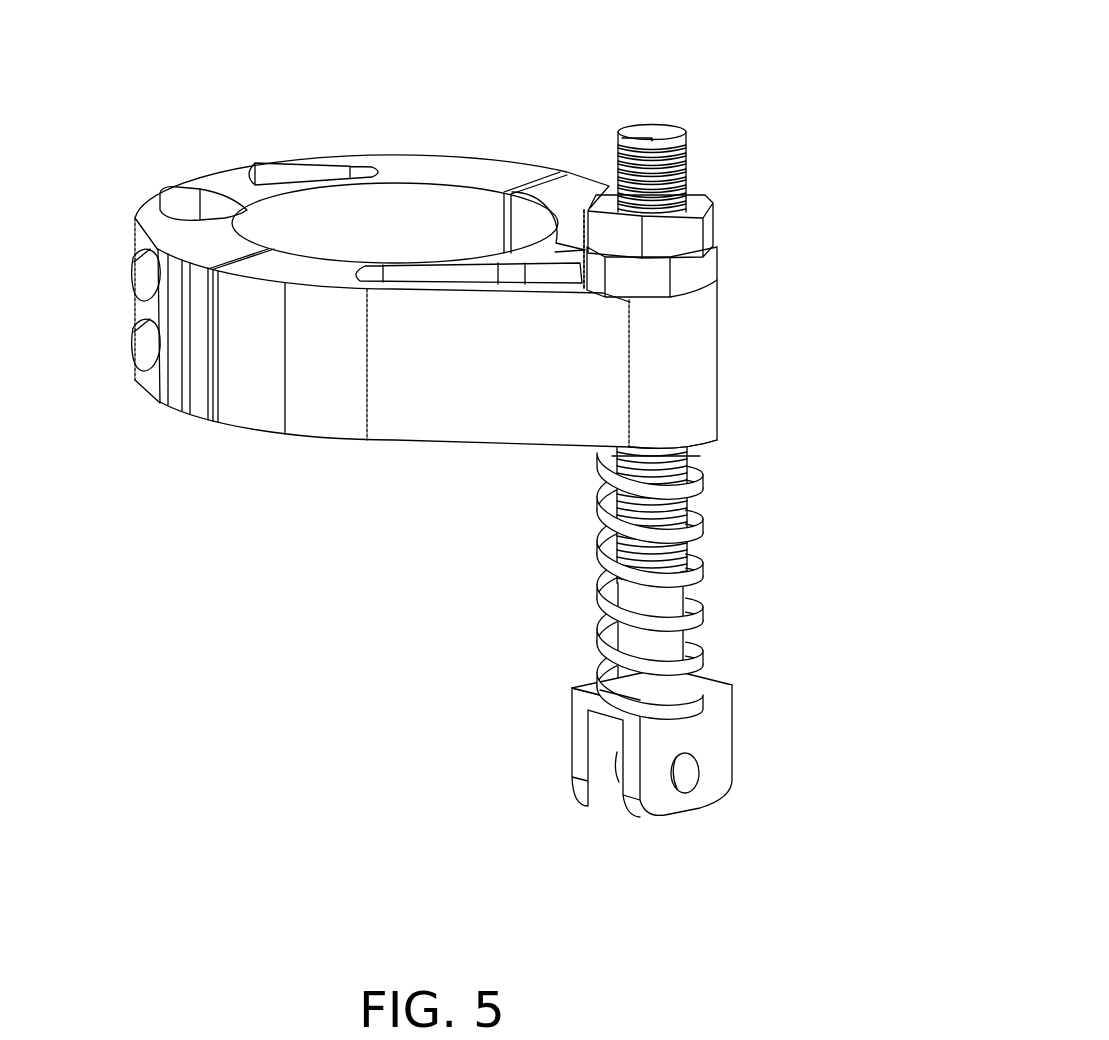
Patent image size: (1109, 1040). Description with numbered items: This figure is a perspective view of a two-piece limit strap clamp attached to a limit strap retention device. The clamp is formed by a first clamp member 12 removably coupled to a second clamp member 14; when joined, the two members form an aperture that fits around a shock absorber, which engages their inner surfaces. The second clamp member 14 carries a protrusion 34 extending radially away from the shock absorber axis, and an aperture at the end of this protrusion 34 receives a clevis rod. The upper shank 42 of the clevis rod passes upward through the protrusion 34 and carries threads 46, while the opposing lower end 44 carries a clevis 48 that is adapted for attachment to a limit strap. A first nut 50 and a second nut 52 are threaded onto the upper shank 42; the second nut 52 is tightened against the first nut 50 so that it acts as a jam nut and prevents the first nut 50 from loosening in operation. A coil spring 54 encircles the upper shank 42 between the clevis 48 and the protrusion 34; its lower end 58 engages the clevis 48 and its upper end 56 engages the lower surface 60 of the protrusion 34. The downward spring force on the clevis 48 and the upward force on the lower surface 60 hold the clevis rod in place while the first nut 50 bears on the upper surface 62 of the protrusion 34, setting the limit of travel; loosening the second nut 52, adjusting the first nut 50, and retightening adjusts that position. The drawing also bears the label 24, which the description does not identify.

The first clamp member 12 is at (473, 446).
The second clamp member 14 is at (252, 417).
The clamp body 24 is at (381, 335).
The protrusion 34 is at (700, 390).
The upper shank 42 is at (712, 144).
The lower end 44 is at (628, 628).
The threads 46 is at (688, 168).
The clevis 48 is at (720, 720).
The first nut 50 is at (705, 275).
The second nut 52 is at (680, 238).
The coil spring 54 is at (688, 522).
The upper end 56 is at (690, 458).
The lower end 58 is at (575, 695).
The lower surface 60 is at (705, 452).
The upper surface 62 is at (587, 290).